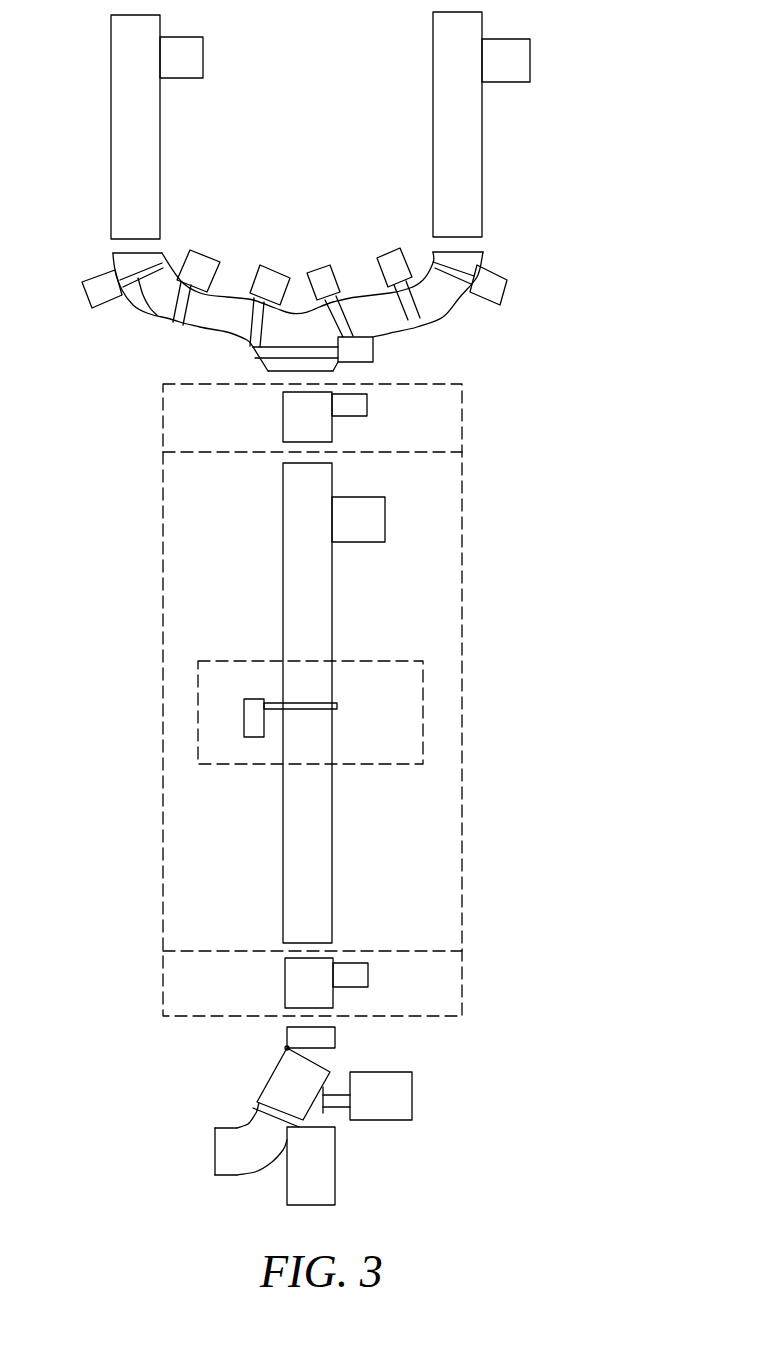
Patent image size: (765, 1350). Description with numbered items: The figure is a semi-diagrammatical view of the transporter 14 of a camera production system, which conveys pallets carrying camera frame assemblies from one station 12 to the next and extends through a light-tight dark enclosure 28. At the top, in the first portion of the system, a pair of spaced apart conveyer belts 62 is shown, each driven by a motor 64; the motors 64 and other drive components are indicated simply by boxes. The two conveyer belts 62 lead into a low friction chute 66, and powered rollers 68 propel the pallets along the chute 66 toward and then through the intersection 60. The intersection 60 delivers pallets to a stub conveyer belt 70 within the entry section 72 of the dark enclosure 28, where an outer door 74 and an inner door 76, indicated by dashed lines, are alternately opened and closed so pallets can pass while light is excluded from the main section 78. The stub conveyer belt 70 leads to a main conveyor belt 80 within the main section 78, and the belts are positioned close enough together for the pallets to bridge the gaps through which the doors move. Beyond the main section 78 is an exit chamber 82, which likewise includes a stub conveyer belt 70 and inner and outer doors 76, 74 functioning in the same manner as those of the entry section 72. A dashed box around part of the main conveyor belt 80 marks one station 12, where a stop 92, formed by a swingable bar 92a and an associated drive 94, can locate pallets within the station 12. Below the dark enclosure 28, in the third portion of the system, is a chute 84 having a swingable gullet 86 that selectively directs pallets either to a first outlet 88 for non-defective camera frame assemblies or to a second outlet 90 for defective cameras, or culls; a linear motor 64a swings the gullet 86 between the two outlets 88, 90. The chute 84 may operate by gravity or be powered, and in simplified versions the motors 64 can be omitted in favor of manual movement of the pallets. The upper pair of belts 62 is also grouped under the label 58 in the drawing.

The station 12 is at (423, 707).
The transporter 14 is at (345, 828).
The dark enclosure 28 is at (462, 553).
The supply assembly 58 is at (425, 190).
The intersection 60 is at (233, 336).
The conveyer belt 62 is at (120, 106).
The motor 64 is at (203, 57).
The linear motor 64a is at (412, 1090).
The chute 66 is at (442, 317).
The powered rollers 68 is at (168, 309).
The stub conveyer belt 70 is at (283, 408).
The entry section 72 is at (162, 412).
The outer door 74 is at (418, 382).
The inner door 76 is at (428, 456).
The main section 78 is at (162, 560).
The main conveyor belt 80 is at (333, 605).
The exit chamber 82 is at (165, 942).
The chute 84 is at (255, 1086).
The swingable gullet 86 is at (327, 1082).
The first outlet 88 is at (213, 1135).
The second outlet 90 is at (335, 1147).
The stop 92 is at (238, 723).
The swingable bar 92a is at (323, 710).
The drive 94 is at (245, 700).